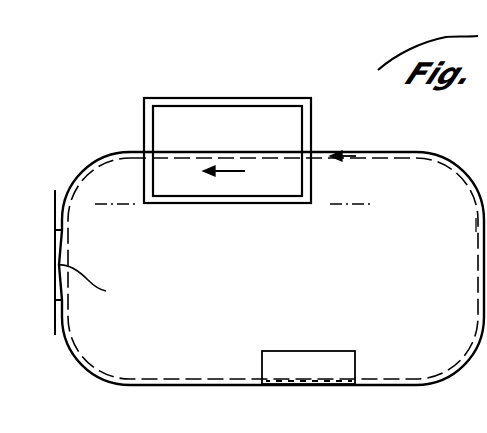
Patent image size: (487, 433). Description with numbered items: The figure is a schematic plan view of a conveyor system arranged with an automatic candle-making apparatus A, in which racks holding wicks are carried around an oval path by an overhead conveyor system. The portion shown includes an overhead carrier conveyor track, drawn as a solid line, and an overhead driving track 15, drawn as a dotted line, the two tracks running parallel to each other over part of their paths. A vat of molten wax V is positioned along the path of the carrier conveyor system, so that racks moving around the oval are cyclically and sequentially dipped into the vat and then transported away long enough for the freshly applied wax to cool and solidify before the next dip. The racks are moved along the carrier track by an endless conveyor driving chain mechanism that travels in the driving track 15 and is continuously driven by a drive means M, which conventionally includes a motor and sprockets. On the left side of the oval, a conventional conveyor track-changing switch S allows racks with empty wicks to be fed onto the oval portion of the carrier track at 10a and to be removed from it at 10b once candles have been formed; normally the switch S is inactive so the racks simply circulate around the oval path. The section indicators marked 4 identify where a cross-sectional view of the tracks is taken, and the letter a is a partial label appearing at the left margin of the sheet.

The apparatus for automatically manufacturing candles A is at (434, 143).
The vat of molten wax V is at (287, 123).
The drive means M is at (293, 351).
The section line 4- 4 is at (117, 205).
The overhead driving track 15 is at (478, 224).
The feed point on conveyor track 10a is at (55, 210).
The removal point on conveyor track 10b is at (55, 327).
The conveyor track-changing switch S is at (89, 284).
The partial label a is at (5, 204).